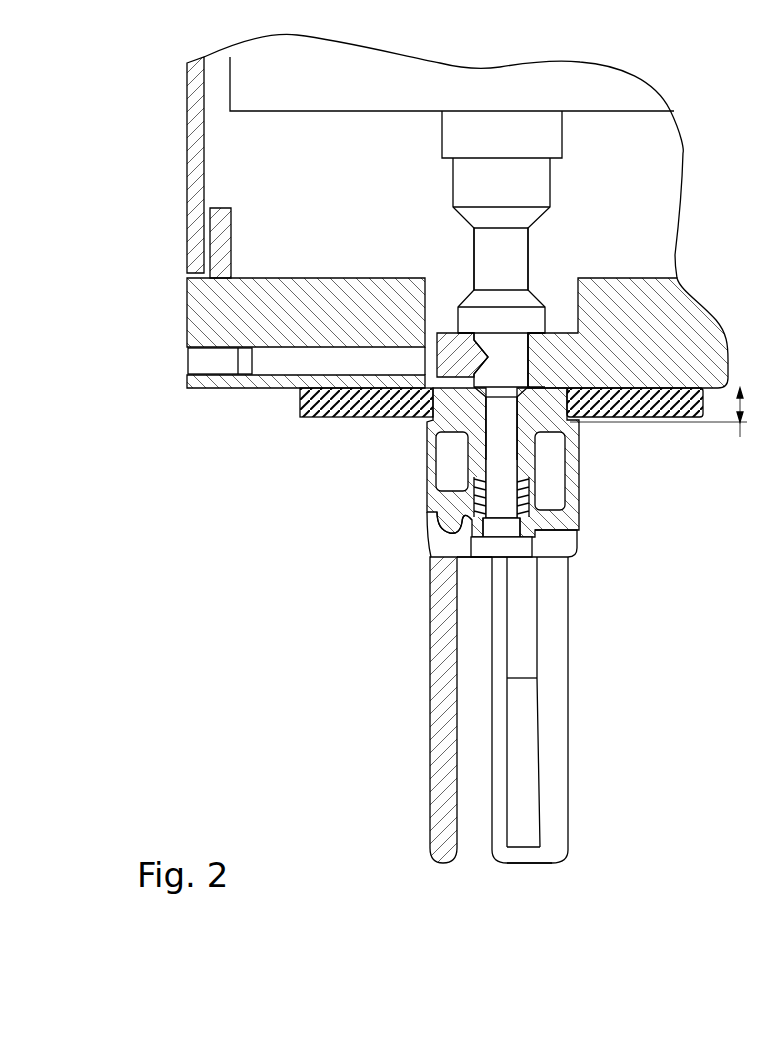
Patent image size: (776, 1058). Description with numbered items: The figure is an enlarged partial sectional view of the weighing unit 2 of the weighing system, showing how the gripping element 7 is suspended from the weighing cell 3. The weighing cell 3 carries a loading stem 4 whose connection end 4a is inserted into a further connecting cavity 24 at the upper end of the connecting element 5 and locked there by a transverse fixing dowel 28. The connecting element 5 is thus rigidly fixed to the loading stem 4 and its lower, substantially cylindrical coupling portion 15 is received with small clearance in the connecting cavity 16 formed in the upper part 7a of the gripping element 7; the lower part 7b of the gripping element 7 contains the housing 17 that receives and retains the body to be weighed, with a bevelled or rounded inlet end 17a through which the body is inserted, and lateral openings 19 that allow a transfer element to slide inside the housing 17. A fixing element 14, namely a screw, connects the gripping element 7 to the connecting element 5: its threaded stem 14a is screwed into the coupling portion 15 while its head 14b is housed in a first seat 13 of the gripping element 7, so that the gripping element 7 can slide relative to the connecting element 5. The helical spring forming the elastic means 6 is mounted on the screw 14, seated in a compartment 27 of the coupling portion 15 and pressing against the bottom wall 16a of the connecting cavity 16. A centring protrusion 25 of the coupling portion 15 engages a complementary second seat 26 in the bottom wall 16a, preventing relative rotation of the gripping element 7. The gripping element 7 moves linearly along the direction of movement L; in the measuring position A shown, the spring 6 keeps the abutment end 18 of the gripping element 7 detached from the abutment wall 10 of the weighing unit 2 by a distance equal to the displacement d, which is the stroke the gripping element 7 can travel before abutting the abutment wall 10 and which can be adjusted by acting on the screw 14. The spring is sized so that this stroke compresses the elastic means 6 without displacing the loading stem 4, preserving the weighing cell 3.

The weighing unit 2 is at (186, 142).
The weighing cell 3 is at (593, 92).
The loading stem 4 is at (472, 183).
The connection end 4a is at (517, 340).
The connecting element 5 is at (538, 373).
The elastic means 6 is at (532, 556).
The gripping element 7 is at (432, 800).
The upper part 7a is at (577, 530).
The lower part 7b is at (432, 756).
The abutment wall 10 is at (673, 403).
The first seat 13 is at (468, 552).
The fixing element 14 is at (535, 482).
The threaded stem 14a is at (497, 456).
The head 14b is at (500, 552).
The coupling portion 15 is at (303, 403).
The connecting cavity 16 is at (431, 482).
The bottom wall 16a is at (560, 500).
The housing 17 is at (527, 700).
The inlet end 17a is at (504, 876).
The abutment end 18 is at (437, 440).
The lateral openings 19 is at (477, 720).
The further connecting cavity 24 is at (478, 322).
The centring protrusion 25 is at (452, 516).
The second seat 26 is at (437, 550).
The compartment 27 is at (473, 500).
The transverse fixing dowel 28 is at (464, 360).
The displacement d is at (667, 412).
The measuring position A is at (266, 477).
The direction of movement L is at (760, 592).